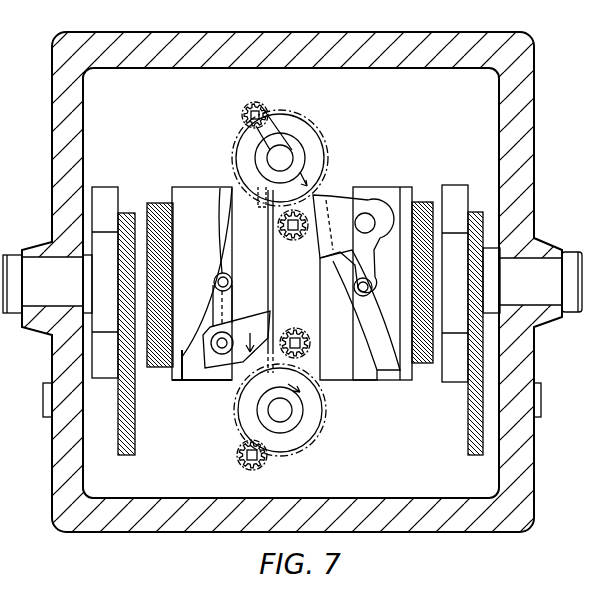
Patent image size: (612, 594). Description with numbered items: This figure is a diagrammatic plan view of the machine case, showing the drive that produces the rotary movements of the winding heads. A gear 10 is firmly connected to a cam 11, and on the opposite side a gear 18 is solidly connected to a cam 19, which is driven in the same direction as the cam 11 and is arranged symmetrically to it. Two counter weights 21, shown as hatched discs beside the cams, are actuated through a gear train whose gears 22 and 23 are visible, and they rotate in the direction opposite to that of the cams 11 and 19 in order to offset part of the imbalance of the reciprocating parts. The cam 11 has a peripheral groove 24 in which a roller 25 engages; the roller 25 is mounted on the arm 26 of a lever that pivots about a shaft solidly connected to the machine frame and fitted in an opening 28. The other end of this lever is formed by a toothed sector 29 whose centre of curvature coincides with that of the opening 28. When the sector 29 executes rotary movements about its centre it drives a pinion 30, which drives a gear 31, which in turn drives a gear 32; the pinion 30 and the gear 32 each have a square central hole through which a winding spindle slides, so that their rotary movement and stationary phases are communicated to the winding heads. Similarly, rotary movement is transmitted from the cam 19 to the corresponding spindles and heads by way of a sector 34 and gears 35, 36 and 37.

The gear 10 is at (164, 202).
The cam 11 is at (178, 372).
The gear 18 is at (427, 366).
The cam 19 is at (400, 190).
The counter weights 21 is at (463, 366).
The gear of the gear train 22 is at (470, 452).
The gear of the gear train 23 is at (483, 223).
The peripheral groove 24 is at (195, 378).
The roller 25 is at (221, 273).
The arm 26 is at (215, 279).
The opening 28 is at (262, 380).
The toothed sector 29 is at (253, 406).
The pinion 30 is at (310, 343).
The gear 31 is at (318, 435).
The gear 32 is at (240, 456).
The sector 34 is at (350, 198).
The gear 35 is at (293, 240).
The gear 36 is at (306, 145).
The gear 37 is at (266, 108).